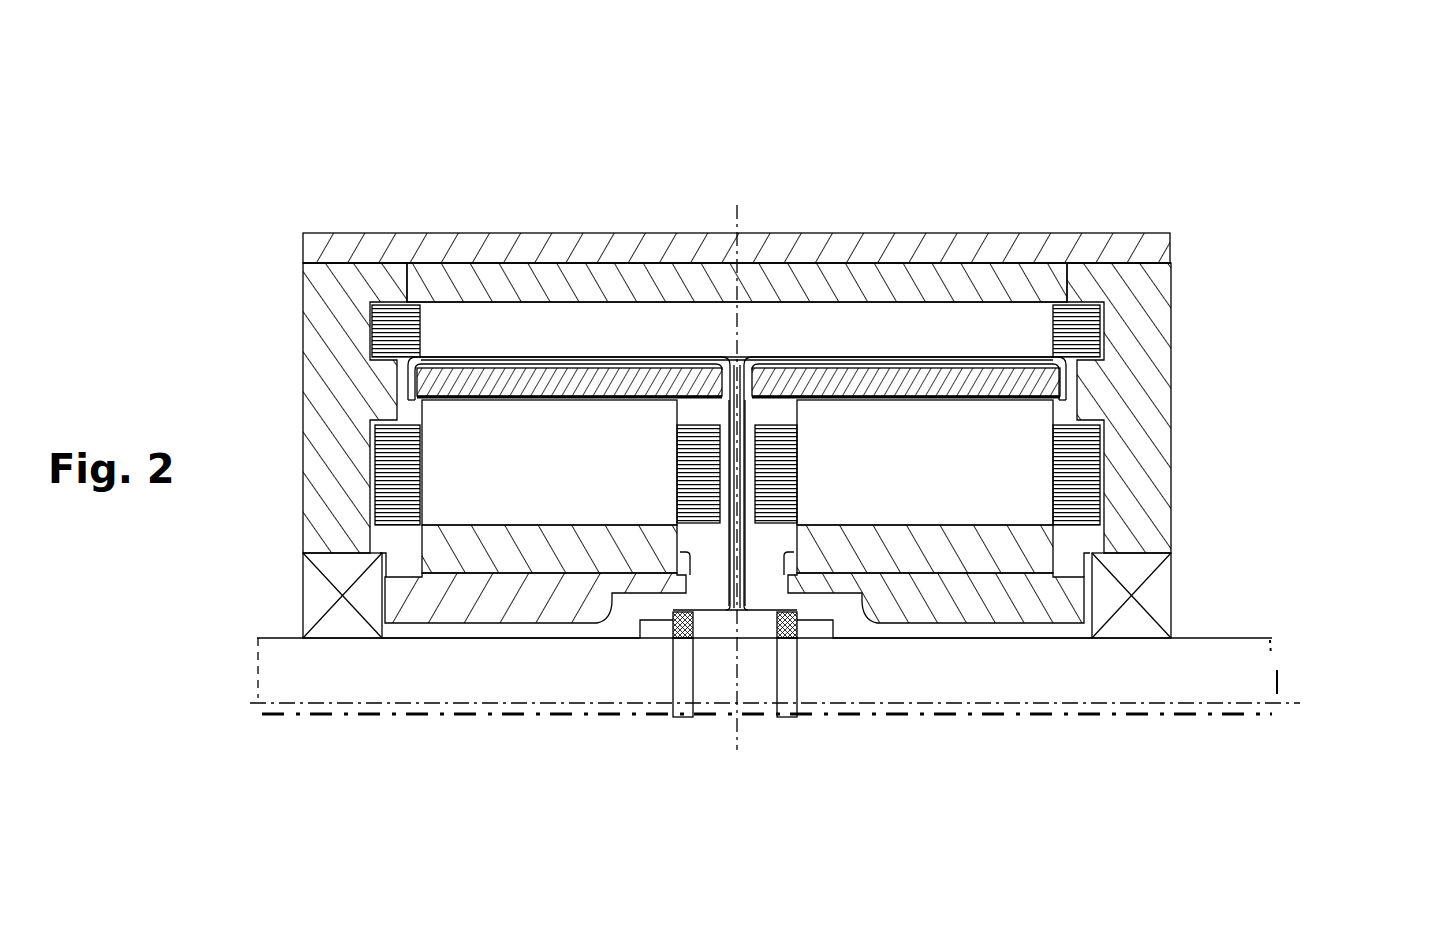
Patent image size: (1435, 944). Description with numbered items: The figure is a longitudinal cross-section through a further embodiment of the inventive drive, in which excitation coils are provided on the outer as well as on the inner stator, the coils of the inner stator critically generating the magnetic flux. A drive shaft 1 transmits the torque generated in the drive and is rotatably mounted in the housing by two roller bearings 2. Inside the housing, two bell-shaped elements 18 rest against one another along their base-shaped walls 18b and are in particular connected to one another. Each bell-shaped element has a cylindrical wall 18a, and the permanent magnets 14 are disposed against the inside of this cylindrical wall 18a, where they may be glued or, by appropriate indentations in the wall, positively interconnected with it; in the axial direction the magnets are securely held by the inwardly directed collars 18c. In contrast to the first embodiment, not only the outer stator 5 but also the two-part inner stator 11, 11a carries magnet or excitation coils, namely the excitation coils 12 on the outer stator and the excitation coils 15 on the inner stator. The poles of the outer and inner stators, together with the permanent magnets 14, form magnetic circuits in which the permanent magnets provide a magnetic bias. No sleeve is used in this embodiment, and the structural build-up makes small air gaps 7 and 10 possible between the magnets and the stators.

The drive shaft 1 is at (1177, 680).
The roller bearings 2 is at (1160, 603).
The outer stator 5 is at (1005, 325).
The air gap 7 is at (470, 360).
The air gap 10 is at (545, 397).
The inner stator 11 is at (1010, 482).
The inner stator 11a is at (920, 548).
The excitation coils 12 is at (1080, 332).
The permanent magnets 14 is at (521, 382).
The excitation coils 15 is at (393, 478).
The bell-shaped element 18 is at (610, 362).
The cylindrical wall 18a is at (655, 358).
The base-shaped wall 18b is at (746, 410).
The inwardly directed collar 18c is at (408, 378).